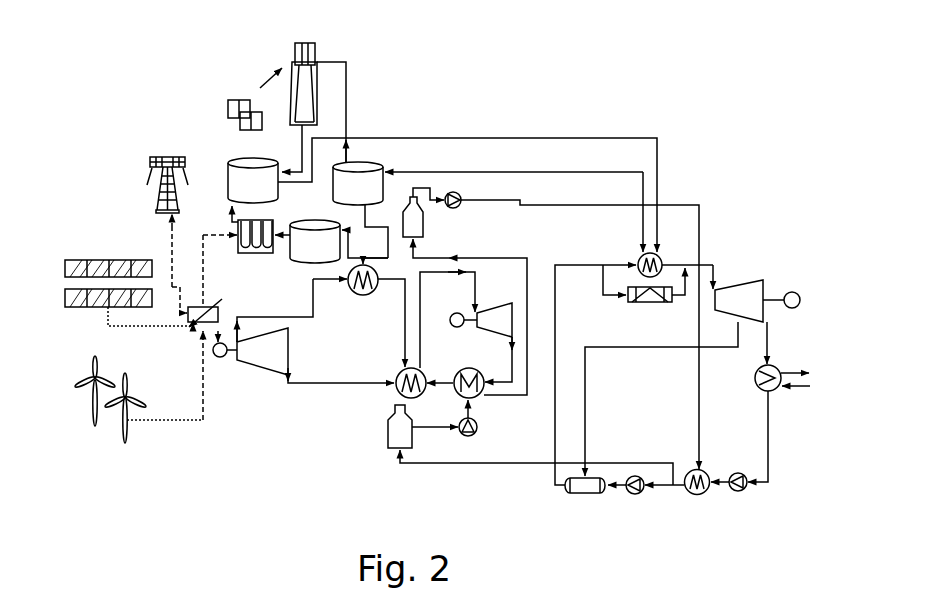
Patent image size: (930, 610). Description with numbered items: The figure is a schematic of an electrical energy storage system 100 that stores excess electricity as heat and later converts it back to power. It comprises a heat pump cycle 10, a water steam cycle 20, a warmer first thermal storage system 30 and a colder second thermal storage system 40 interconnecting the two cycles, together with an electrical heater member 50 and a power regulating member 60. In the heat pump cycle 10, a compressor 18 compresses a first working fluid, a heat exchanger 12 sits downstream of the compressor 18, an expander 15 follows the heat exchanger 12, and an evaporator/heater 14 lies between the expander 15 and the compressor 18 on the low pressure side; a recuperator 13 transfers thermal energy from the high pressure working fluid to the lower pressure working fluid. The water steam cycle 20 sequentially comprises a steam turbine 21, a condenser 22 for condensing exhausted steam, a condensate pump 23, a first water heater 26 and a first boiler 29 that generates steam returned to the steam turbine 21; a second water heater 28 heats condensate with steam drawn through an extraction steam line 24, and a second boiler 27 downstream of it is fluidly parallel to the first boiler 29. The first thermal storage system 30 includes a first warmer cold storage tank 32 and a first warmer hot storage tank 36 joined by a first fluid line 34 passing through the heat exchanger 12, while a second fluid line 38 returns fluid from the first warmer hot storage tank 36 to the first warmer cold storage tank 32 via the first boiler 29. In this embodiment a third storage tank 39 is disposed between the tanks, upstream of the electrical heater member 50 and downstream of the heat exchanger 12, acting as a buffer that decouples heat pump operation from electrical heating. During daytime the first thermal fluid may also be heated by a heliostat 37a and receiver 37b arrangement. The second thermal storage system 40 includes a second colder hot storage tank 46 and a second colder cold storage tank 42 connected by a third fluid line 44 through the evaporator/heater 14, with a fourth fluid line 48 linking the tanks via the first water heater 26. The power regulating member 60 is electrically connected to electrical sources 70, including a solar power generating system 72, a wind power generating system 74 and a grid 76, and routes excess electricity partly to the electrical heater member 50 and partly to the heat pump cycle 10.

The electrical energy storage system 100 is at (646, 100).
The heat pump cycle 10 is at (342, 365).
The heat exchanger 12 is at (363, 296).
The recuperator 13 is at (403, 367).
The evaporator/heater 14 is at (461, 368).
The expander 15 is at (481, 324).
The compressor 18 is at (263, 369).
The water steam cycle 20 is at (590, 340).
The steam turbine 21 is at (738, 285).
The condenser 22 is at (762, 392).
The condensate pump 23 is at (740, 492).
The extraction steam line 24 is at (628, 348).
The first water heater 26 is at (700, 495).
The second boiler 27 is at (640, 302).
The second water heater 28 is at (590, 494).
The first boiler 29 is at (640, 256).
The first thermal storage system 30 is at (313, 210).
The first warmer cold storage tank 32 is at (383, 164).
The first fluid line 34 is at (366, 227).
The first warmer hot storage tank 36 is at (233, 160).
The heliostat 37a is at (242, 100).
The receiver 37b is at (316, 48).
The second fluid line 38 is at (658, 150).
The third storage tank 39 is at (300, 256).
The second thermal storage system 40 is at (692, 233).
The second colder cold storage tank 42 is at (423, 212).
The third fluid line 44 is at (436, 428).
The second colder hot storage tank 46 is at (388, 432).
The fourth fluid line 48 is at (700, 218).
The electrical heater member 50 is at (236, 226).
The power regulating member 60 is at (222, 305).
The electrical sources 70 is at (75, 366).
The solar power generating system 72 is at (98, 257).
The wind power generating system 74 is at (96, 426).
The grid 76 is at (160, 158).